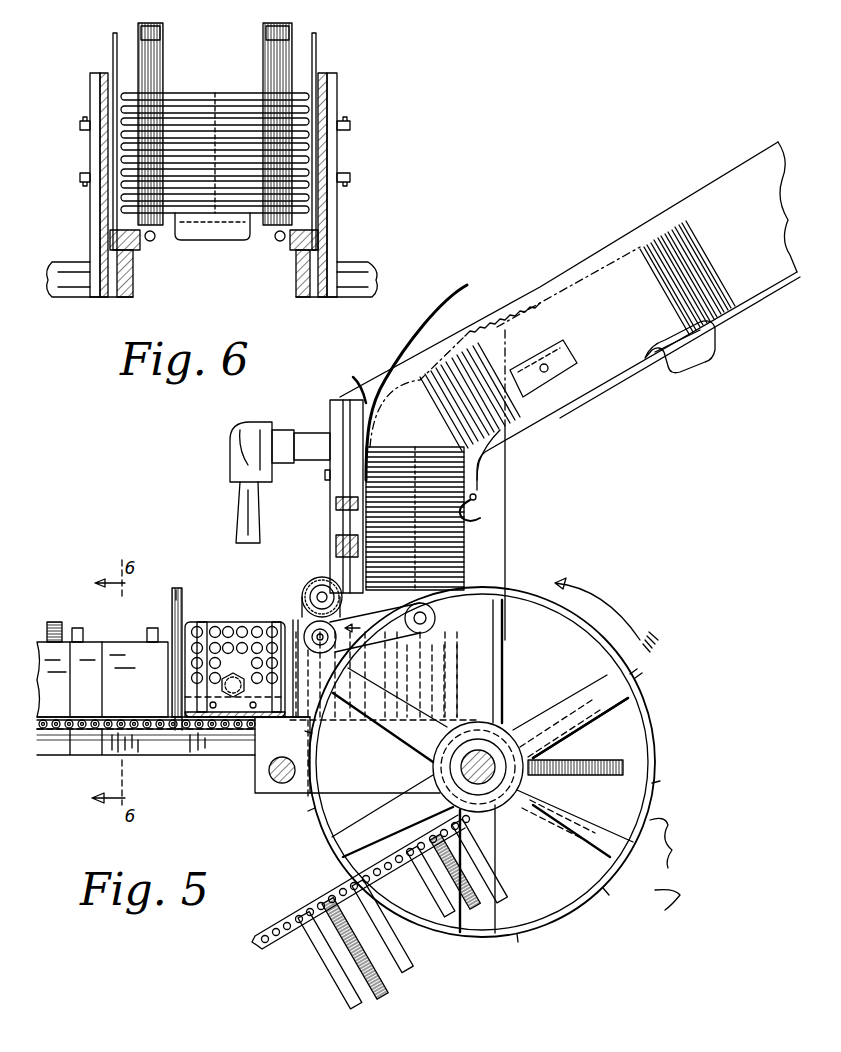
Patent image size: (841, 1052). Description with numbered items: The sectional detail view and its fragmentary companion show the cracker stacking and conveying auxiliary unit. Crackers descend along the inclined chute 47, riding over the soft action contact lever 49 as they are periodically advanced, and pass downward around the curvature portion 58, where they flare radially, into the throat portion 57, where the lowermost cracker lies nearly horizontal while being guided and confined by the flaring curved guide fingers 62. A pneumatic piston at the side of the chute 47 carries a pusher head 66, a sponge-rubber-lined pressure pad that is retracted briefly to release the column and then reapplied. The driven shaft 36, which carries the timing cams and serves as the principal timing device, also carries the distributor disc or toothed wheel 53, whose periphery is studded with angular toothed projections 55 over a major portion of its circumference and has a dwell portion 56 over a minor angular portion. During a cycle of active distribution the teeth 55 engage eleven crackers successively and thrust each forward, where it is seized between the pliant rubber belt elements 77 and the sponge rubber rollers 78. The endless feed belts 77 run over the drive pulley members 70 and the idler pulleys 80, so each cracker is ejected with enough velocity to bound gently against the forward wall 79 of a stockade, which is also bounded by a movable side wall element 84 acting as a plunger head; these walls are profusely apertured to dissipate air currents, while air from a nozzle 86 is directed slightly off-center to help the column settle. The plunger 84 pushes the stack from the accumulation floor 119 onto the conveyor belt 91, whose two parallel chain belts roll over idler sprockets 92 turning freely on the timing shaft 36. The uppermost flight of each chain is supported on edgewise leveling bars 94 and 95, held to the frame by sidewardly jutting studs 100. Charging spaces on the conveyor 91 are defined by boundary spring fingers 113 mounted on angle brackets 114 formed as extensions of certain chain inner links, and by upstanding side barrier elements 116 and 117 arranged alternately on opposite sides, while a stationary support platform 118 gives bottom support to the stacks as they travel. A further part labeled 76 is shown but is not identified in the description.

In FIG. 5, the driven shaft 36 is at (462, 768).
In FIG. 5, the chute 47 is at (748, 172).
In FIG. 5, the soft action contact lever 49 is at (655, 345).
In FIG. 5, the distributor disc 53 is at (598, 713).
In FIG. 5, the angular toothed projections 55 is at (618, 880).
In FIG. 5, the dwell portion 56 is at (538, 592).
In FIG. 5, the throat portion 57 is at (480, 518).
In FIG. 5, the curvature portion 58 is at (485, 462).
In FIG. 5, the flaring curved guide fingers 62 is at (438, 310).
In FIG. 5, the pusher head 66 is at (552, 345).
In FIG. 5, the drive pulley member 70 is at (345, 658).
In FIG. 5, the bracket arm 76 is at (305, 612).
In FIG. 5, the pliant rubber belt elements 77 is at (352, 648).
In FIG. 5, the sponge rubber rollers 78 is at (322, 578).
In FIG. 5, the forward wall 79 is at (177, 592).
In FIG. 5, the idler pulleys 80 is at (435, 612).
In FIG. 5, the movable side wall element 84 is at (240, 622).
In FIG. 5, the nozzles 86 is at (238, 505).
In FIG. 5, the conveyor belt 91 is at (298, 908).
In FIG. 5, the idler sprocket 92 is at (440, 748).
In FIG. 6, the leveling bar 94 is at (133, 290).
In FIG. 6, the leveling bar 95 is at (296, 290).
In FIG. 5, the leveling bar 95 is at (158, 755).
In FIG. 6, the sidewardly jutting studs 100 is at (348, 270).
In FIG. 6, the boundary springs 113 is at (263, 50).
In FIG. 5, the boundary springs 113 is at (56, 622).
In FIG. 6, the angle brackets 114 is at (152, 242).
In FIG. 5, the angle brackets 114 is at (180, 740).
In FIG. 6, the side barrier element 116 is at (316, 38).
In FIG. 5, the side barrier element 116 is at (203, 626).
In FIG. 6, the side barrier element 117 is at (113, 38).
In FIG. 5, the side barrier element 117 is at (80, 628).
In FIG. 6, the stationary support platform 118 is at (230, 238).
In FIG. 5, the accumulation floor 119 is at (232, 730).